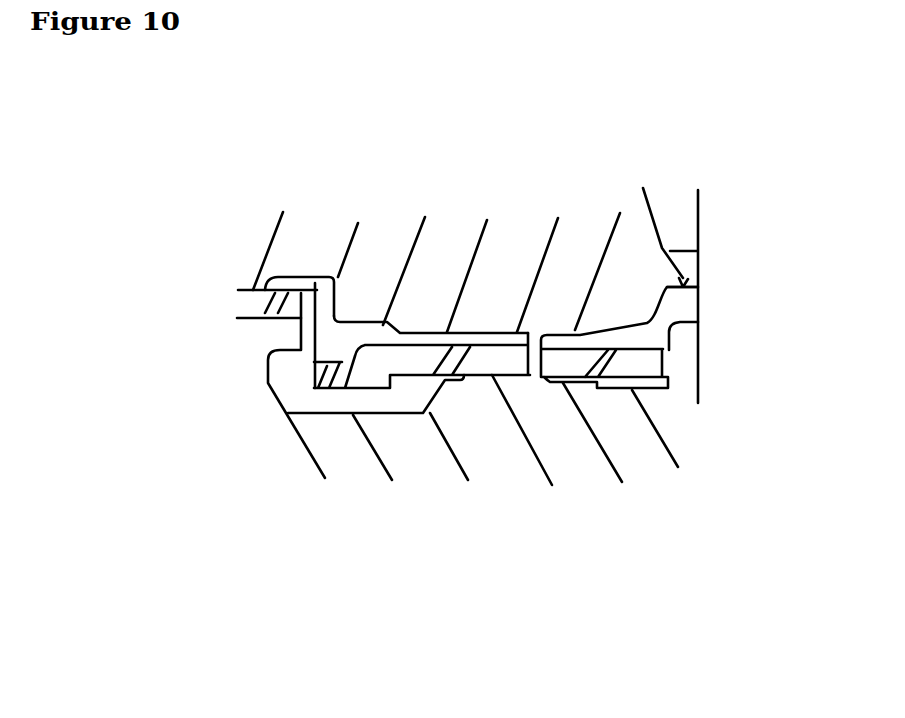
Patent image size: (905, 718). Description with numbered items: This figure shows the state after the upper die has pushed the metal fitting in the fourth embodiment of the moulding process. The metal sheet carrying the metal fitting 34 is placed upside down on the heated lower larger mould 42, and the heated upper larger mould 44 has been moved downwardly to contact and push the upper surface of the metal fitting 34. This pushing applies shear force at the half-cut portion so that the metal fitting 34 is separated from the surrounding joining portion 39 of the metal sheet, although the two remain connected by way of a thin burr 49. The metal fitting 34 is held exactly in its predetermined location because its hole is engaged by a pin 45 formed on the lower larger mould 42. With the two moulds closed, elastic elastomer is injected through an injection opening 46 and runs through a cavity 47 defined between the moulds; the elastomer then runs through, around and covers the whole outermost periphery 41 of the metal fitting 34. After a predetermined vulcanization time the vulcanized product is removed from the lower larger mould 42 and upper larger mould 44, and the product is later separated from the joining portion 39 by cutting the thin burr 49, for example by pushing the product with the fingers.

The metal fitting 34 is at (487, 363).
The joining portion 39 is at (256, 300).
The outermost periphery 41 is at (316, 390).
The lower larger mould 42 is at (413, 450).
The upper larger mould 44 is at (495, 260).
The pin 45 is at (683, 362).
The injection opening 46 is at (688, 278).
The cavity 47 is at (342, 337).
The thin burr 49 is at (326, 320).